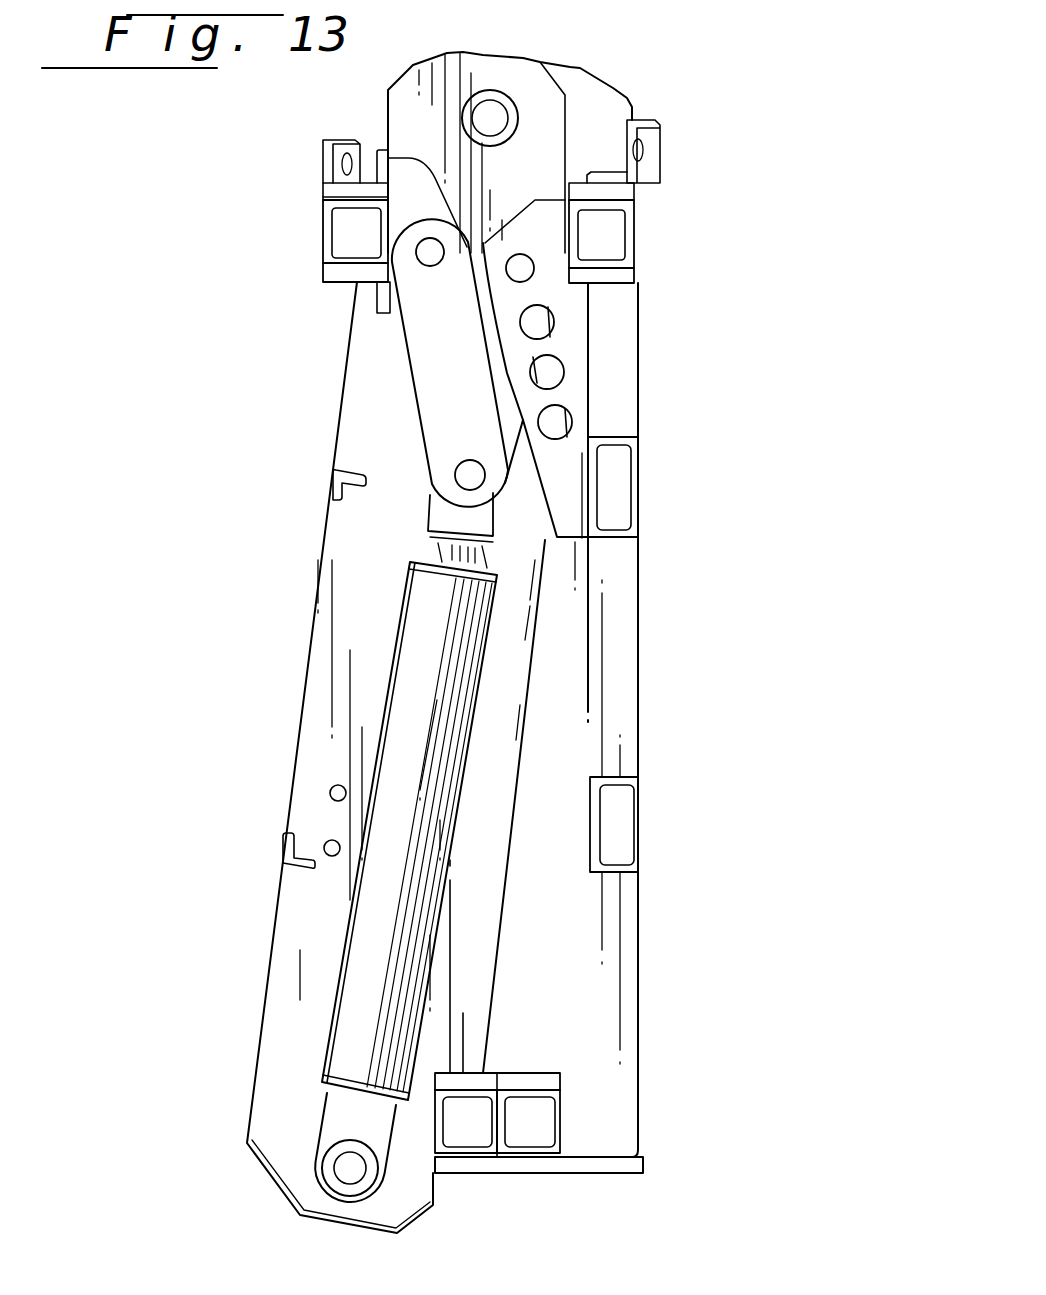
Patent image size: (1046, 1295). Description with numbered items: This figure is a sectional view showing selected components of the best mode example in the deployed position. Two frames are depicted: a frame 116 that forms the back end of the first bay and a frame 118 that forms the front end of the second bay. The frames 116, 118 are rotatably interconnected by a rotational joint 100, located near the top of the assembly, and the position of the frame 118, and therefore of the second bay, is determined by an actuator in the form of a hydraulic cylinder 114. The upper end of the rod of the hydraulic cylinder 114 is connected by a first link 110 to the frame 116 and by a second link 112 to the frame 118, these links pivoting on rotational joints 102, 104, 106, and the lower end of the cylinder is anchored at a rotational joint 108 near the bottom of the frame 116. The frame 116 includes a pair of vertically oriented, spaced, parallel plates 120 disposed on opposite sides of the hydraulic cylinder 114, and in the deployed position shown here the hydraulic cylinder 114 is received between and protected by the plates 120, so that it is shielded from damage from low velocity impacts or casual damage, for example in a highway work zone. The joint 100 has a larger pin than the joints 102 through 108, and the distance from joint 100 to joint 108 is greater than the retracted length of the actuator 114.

The rotational joint 100 is at (506, 118).
The rotational joint 102 is at (522, 268).
The rotational joint 104 is at (430, 252).
The rotational joint 106 is at (468, 476).
The rotational joint 108 is at (350, 1166).
The first link 110 is at (425, 350).
The second link 112 is at (513, 420).
The hydraulic cylinder 114 is at (383, 910).
The frame 116 is at (260, 612).
The frame 118 is at (683, 741).
The plate 120 is at (300, 777).